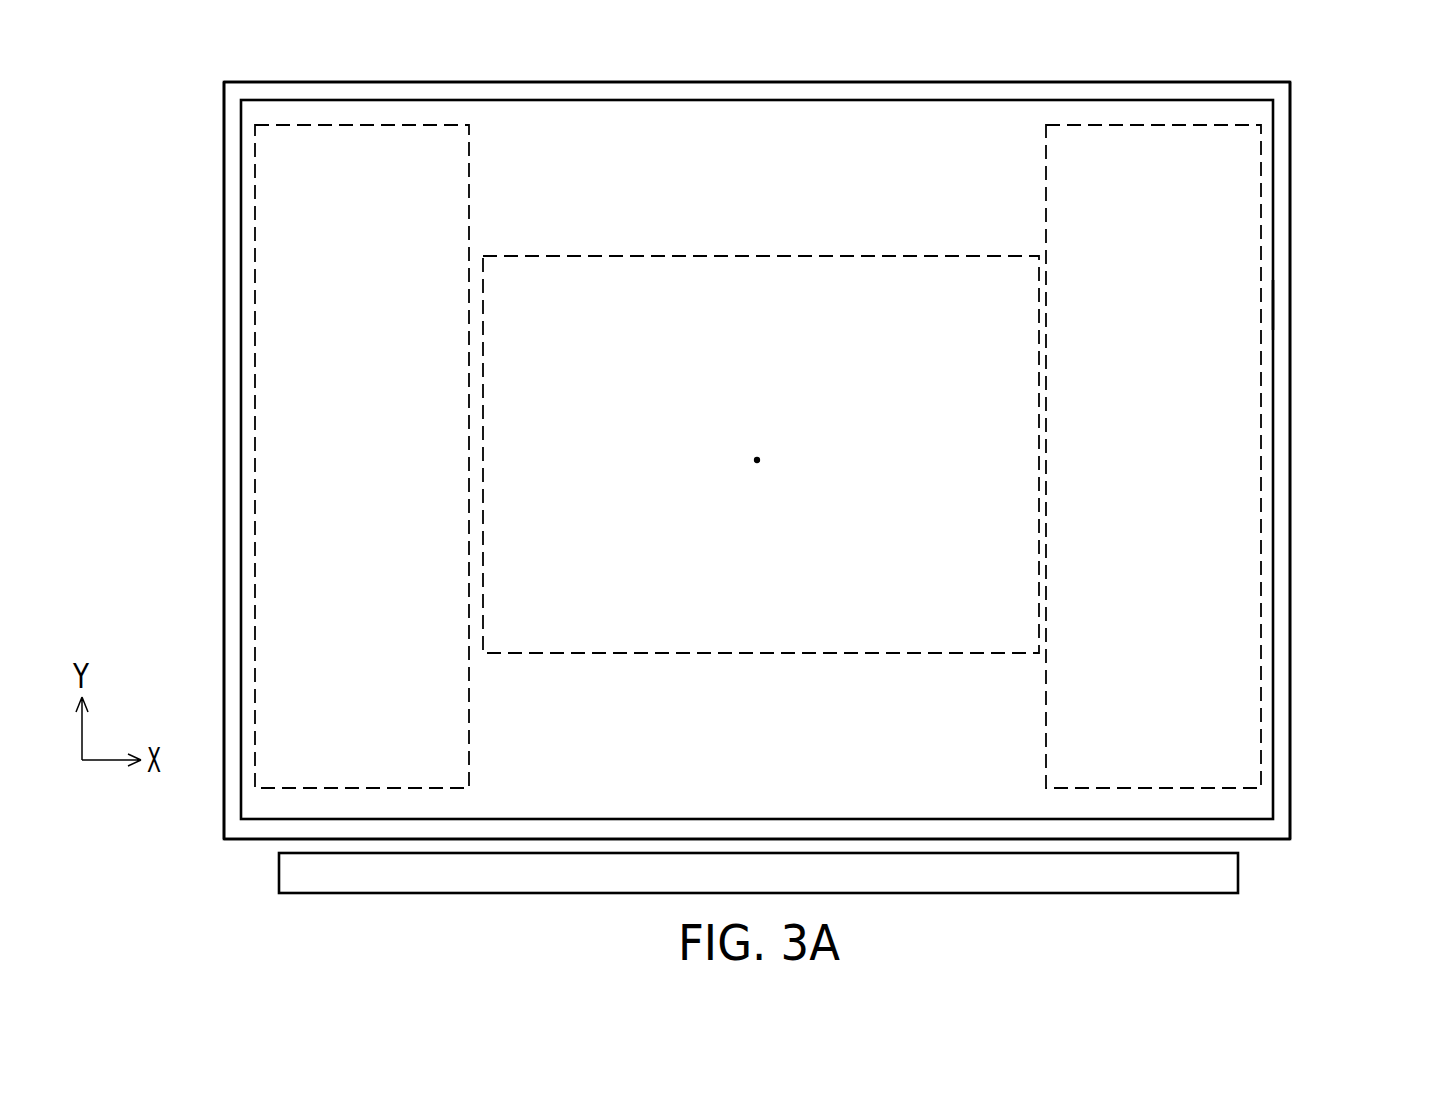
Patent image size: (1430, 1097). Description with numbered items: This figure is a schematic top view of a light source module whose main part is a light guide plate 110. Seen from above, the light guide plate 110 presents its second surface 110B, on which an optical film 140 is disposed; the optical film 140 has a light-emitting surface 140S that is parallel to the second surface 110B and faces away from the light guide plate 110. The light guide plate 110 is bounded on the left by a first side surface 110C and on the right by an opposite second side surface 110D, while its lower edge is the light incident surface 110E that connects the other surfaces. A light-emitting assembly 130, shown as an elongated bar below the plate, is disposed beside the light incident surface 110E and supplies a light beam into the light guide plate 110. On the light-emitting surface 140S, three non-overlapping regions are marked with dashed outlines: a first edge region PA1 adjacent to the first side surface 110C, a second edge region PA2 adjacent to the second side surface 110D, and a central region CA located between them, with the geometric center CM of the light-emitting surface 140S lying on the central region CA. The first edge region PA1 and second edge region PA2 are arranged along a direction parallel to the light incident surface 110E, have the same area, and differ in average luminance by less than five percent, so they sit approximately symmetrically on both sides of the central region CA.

The light guide plate 110 is at (1290, 428).
The second surface 110B is at (1281, 205).
The first side surface 110C is at (222, 532).
The second side surface 110D is at (1292, 532).
The light incident surface 110E is at (1272, 841).
The optical film 140 is at (1274, 369).
The light-emitting surface 140S is at (1222, 311).
The light-emitting assembly 130 is at (278, 873).
The first edge region PA1 is at (358, 124).
The second edge region PA2 is at (1148, 124).
The central region CA is at (749, 255).
The geometric center CM is at (760, 458).